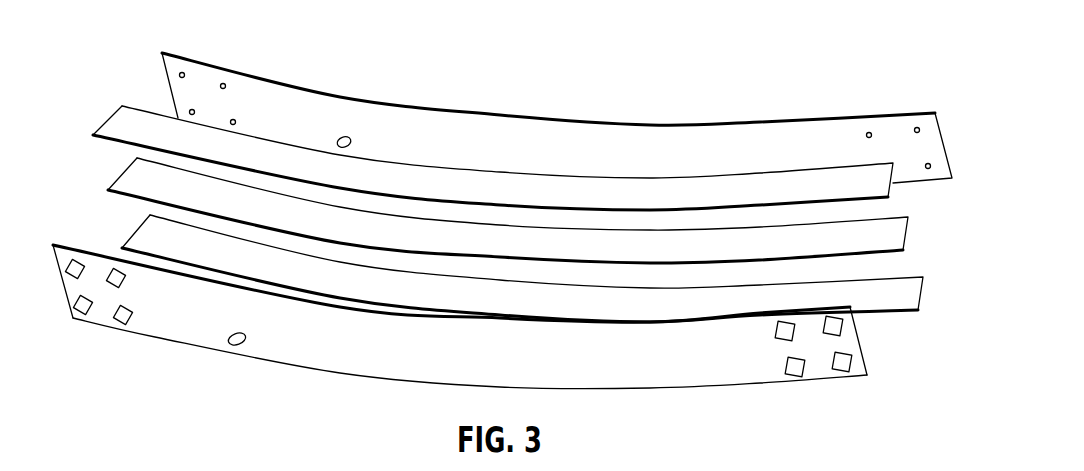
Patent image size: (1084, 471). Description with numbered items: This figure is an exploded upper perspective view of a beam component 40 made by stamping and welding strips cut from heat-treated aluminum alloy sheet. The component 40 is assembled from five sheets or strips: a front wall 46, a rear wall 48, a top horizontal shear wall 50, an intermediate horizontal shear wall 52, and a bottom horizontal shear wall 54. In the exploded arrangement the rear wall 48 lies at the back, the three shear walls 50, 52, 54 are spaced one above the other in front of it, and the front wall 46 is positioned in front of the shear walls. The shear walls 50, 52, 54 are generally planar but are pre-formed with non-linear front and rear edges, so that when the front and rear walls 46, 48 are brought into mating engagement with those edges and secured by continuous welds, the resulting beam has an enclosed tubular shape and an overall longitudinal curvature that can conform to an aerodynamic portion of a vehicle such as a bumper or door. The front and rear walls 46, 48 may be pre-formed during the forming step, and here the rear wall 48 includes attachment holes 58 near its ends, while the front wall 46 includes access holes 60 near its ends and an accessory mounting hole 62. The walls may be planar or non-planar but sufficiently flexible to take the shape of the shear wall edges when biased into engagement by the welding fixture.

The component 40 is at (735, 82).
The front wall 46 is at (343, 345).
The rear wall 48 is at (445, 108).
The top horizontal shear wall 50 is at (120, 125).
The intermediate horizontal shear wall 52 is at (133, 178).
The bottom horizontal shear wall 54 is at (145, 237).
The attachment holes 58 is at (231, 121).
The access holes 60 is at (115, 288).
The accessory mounting hole 62 is at (235, 345).